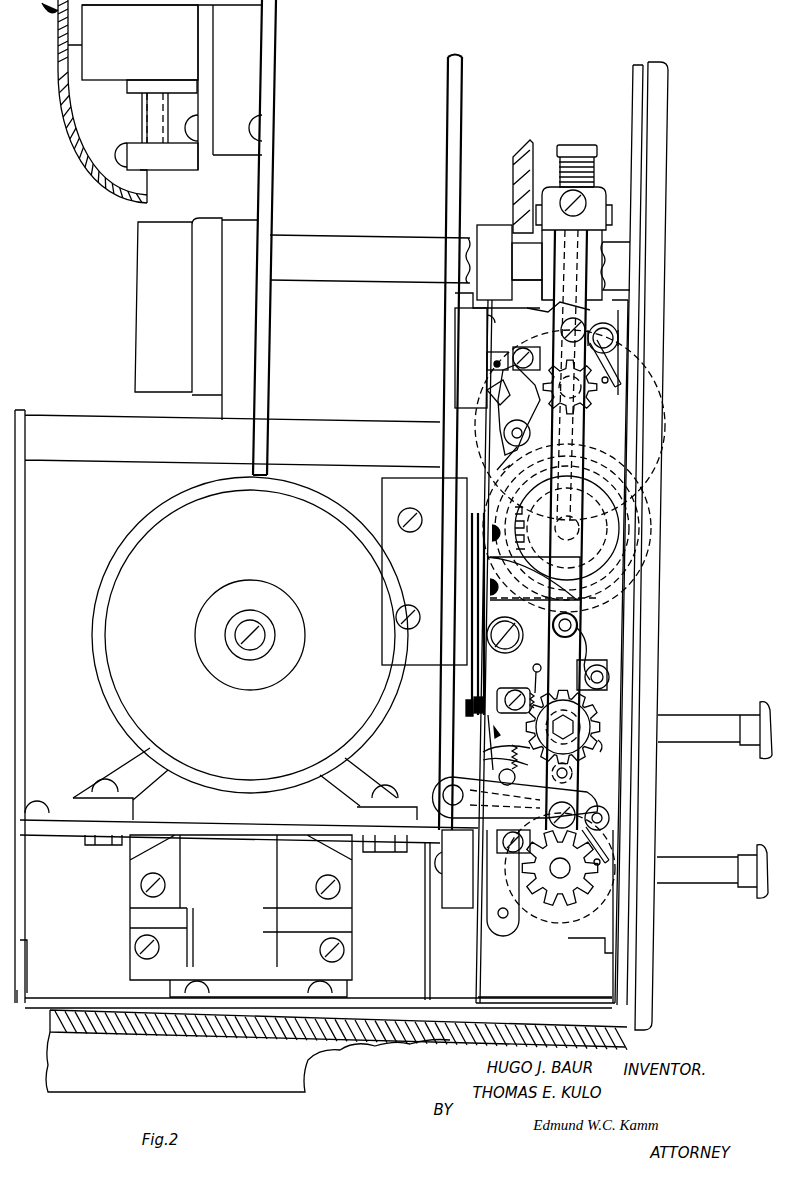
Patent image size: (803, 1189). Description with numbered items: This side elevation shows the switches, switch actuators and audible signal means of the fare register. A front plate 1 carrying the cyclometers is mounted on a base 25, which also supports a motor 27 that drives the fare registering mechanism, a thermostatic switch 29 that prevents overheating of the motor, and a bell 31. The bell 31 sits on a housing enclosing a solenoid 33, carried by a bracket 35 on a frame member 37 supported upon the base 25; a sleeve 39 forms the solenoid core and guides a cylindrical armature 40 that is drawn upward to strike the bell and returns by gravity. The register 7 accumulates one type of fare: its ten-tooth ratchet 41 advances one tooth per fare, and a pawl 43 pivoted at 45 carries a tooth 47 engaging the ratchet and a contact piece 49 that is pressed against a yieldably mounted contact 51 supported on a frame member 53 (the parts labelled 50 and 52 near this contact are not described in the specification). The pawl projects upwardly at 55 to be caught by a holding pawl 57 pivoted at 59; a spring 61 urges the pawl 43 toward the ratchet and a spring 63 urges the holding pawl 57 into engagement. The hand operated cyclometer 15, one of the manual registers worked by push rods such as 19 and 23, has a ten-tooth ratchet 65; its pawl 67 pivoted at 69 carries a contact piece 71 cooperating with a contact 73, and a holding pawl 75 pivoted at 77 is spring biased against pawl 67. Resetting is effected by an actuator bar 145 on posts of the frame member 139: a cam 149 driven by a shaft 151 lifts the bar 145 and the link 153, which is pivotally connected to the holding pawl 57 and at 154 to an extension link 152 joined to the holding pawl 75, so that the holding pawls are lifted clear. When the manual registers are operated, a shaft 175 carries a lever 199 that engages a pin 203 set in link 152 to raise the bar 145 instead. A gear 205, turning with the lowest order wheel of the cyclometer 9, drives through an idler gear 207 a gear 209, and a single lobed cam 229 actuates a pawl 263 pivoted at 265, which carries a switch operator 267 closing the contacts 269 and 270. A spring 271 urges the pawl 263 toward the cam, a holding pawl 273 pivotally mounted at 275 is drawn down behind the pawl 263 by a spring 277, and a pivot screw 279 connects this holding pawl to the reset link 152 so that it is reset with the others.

The front plate 1 is at (660, 212).
The register 7 is at (640, 392).
The cyclometer 9 is at (577, 600).
The cyclometer 15 is at (620, 915).
The push rod 19 is at (706, 743).
The push rod 23 is at (690, 862).
The base 25 is at (478, 1044).
The motor 27 is at (240, 641).
The thermostatic switch 29 is at (193, 955).
The bell 31 is at (103, 200).
The solenoid 33 is at (165, 87).
The bracket 35 is at (224, 150).
The frame member 37 is at (278, 130).
The sleeve 39 is at (142, 112).
The armature 40 is at (158, 128).
The ten-tooth ratchet 41 is at (584, 405).
The pawl 43 is at (500, 418).
The pivot 45 is at (510, 438).
The tooth 47 is at (558, 405).
The contact piece 49 is at (513, 352).
The contact 50 is at (487, 392).
The yieldably mounted contact 51 is at (487, 358).
The contact 52 is at (494, 366).
The frame member 53 is at (445, 404).
The projecting end of pawl 55 is at (490, 322).
The holding pawl 57 is at (585, 325).
The pivot 59 is at (615, 338).
The spring 61 is at (510, 455).
The spring 63 is at (620, 366).
The ten-tooth ratchet 65 is at (562, 902).
The pawl 67 is at (533, 858).
The pivot 69 is at (500, 918).
The contact piece 71 is at (502, 826).
The contact 73 is at (478, 840).
The holding pawl 75 is at (590, 810).
The pivot 77 is at (609, 816).
The frame member 139 is at (625, 428).
The actuator bar 145 is at (592, 198).
The cam 149 is at (550, 296).
The shaft 151 is at (527, 202).
The extension link 152 is at (575, 735).
The link 153 is at (585, 464).
The pivotal connection 154 is at (578, 623).
The shaft 175 is at (441, 792).
The lever 199 is at (471, 796).
The pin 203 is at (573, 773).
The gear 205 is at (552, 514).
The idler gear 207 is at (445, 676).
The gear 209 is at (600, 744).
The single lobed cam 229 is at (512, 748).
The pawl 263 is at (492, 722).
The pivot 265 is at (499, 778).
The switch operator 267 is at (497, 696).
The contact 269 is at (466, 712).
The contact 270 is at (474, 703).
The spring 271 is at (488, 740).
The holding pawl 273 is at (580, 631).
The pivot 275 is at (610, 677).
The spring 277 is at (483, 757).
The pivot screw 279 is at (515, 620).